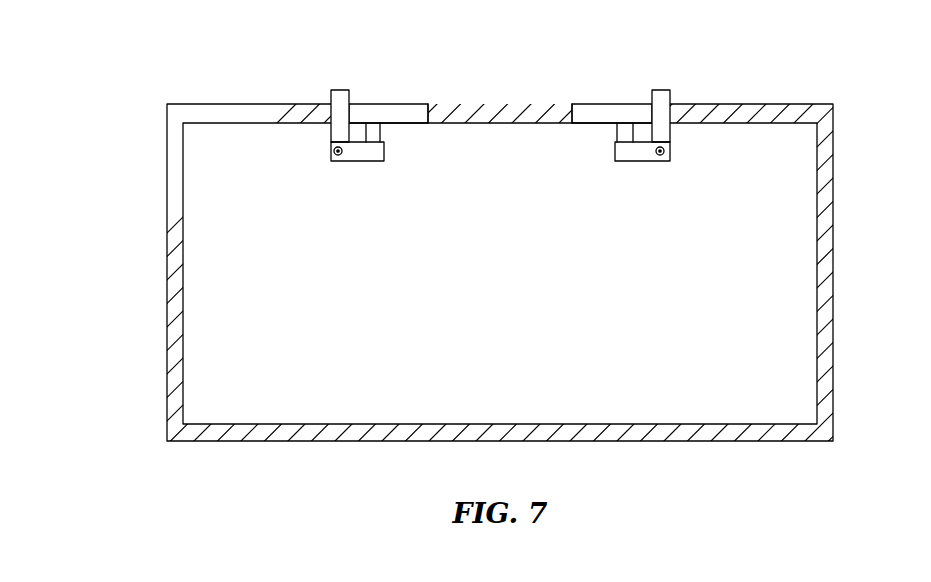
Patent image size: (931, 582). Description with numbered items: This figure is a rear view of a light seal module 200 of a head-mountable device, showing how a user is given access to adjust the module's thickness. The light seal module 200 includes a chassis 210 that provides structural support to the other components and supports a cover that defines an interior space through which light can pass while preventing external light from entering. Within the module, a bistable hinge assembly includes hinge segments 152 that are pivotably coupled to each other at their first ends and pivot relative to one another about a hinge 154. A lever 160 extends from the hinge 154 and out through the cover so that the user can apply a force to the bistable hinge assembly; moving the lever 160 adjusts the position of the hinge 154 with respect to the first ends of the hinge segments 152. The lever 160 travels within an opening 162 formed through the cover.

The light seal module 200 is at (116, 34).
The chassis 210 is at (174, 217).
The lever 160 is at (340, 97).
The opening 162 is at (388, 113).
The hinge segments 152 is at (364, 158).
The hinge 154 is at (333, 151).